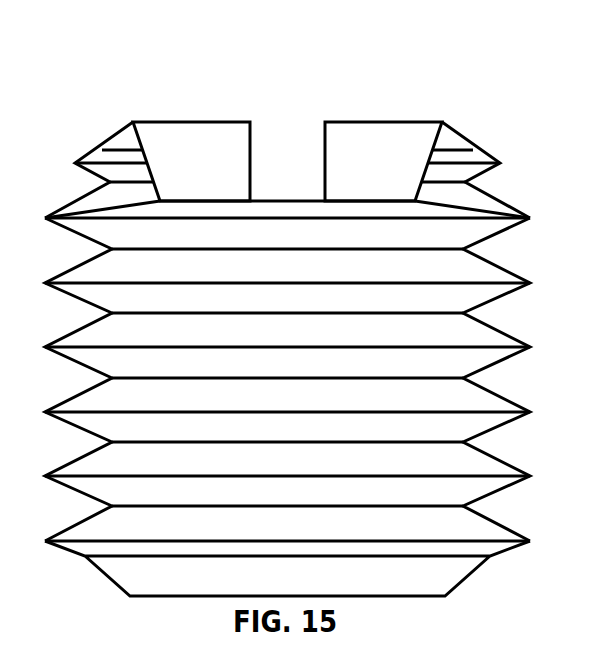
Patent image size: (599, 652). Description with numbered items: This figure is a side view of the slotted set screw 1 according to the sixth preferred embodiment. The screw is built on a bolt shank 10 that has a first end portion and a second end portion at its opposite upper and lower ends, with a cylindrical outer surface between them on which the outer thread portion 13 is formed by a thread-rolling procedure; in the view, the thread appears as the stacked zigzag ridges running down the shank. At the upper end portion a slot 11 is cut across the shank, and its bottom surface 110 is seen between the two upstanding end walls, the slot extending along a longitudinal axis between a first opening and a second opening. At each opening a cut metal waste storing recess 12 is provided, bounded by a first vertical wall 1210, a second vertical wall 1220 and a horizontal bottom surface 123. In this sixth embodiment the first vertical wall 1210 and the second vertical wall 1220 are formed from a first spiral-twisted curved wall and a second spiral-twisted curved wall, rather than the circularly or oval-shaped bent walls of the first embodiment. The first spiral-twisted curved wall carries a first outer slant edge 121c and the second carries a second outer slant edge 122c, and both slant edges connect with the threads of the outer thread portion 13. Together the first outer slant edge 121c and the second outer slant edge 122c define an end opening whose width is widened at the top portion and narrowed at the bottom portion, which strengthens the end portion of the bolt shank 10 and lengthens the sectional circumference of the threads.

The slotted set screw 1 is at (307, 324).
The bolt shank 10 is at (442, 575).
The slot 11 is at (297, 121).
The bottom surface 110 is at (285, 192).
The cut metal waste storing recess 12 is at (444, 121).
The first outer slant edge 121c is at (138, 140).
The second outer slant edge 122c is at (430, 140).
The first vertical wall 1210 is at (212, 140).
The second vertical wall 1220 is at (375, 143).
The horizontal bottom surface 123 is at (198, 131).
The outer thread portion 13 is at (515, 410).